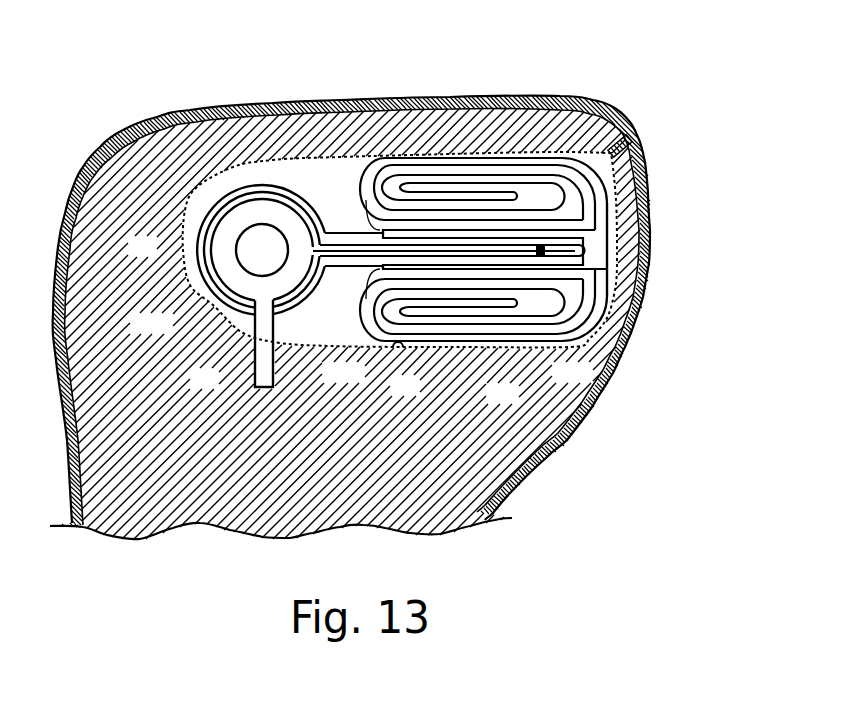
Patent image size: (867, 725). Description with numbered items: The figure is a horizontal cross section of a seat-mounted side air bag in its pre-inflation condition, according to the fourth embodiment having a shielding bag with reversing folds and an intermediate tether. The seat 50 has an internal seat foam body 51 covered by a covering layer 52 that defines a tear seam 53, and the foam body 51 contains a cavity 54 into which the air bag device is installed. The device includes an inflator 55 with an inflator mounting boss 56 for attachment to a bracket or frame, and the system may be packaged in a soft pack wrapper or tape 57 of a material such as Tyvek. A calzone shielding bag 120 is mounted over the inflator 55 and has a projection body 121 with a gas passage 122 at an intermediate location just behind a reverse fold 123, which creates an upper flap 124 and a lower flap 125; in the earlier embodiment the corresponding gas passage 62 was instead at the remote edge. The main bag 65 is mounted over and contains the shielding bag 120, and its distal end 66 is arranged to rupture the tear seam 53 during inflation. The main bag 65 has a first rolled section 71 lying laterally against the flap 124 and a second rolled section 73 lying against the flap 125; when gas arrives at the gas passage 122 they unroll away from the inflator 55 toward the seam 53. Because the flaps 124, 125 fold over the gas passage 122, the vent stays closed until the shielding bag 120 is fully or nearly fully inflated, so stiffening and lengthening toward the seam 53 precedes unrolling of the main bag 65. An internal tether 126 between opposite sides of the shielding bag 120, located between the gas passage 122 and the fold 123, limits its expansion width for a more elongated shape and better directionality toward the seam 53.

The seat 50 is at (640, 424).
The seat foam body 51 is at (520, 452).
The covering layer 52 is at (628, 322).
The tear seam 53 is at (642, 131).
The cavity 54 is at (251, 166).
The inflator 55 is at (212, 242).
The inflator mounting boss 56 is at (254, 372).
The soft pack wrapper or tape 57 is at (400, 352).
The gas passage 62 is at (634, 224).
The main bag 65 is at (299, 180).
The distal end 66 is at (606, 203).
The first rolled section 71 is at (468, 157).
The second rolled section 73 is at (490, 347).
The shielding bag 120 is at (207, 297).
The projection body 121 is at (347, 264).
The gas passage 122 is at (550, 258).
The reverse fold 123 is at (548, 256).
The upper flap 124 is at (377, 233).
The lower flap 125 is at (372, 270).
The internal tether 126 is at (560, 247).